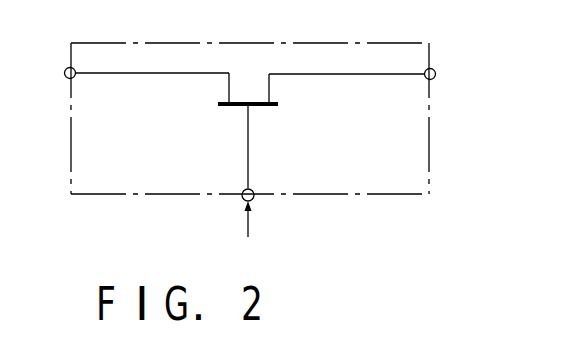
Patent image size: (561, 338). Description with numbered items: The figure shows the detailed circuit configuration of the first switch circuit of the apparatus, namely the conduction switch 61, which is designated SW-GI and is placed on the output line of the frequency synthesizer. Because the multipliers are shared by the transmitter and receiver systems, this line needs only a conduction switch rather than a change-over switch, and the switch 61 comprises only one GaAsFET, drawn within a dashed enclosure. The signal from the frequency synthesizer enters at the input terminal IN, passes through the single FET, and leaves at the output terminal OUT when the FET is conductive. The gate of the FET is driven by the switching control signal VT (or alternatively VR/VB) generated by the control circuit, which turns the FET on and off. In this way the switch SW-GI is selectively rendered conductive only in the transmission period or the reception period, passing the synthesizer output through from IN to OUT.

The conduction switch 61 is at (315, 43).
The switch designation SW-G1 SW-GI is at (258, 98).
The input terminal IN is at (134, 73).
The output terminal OUT is at (379, 74).
The switching control signal VT (or VR/VB) VT is at (331, 213).